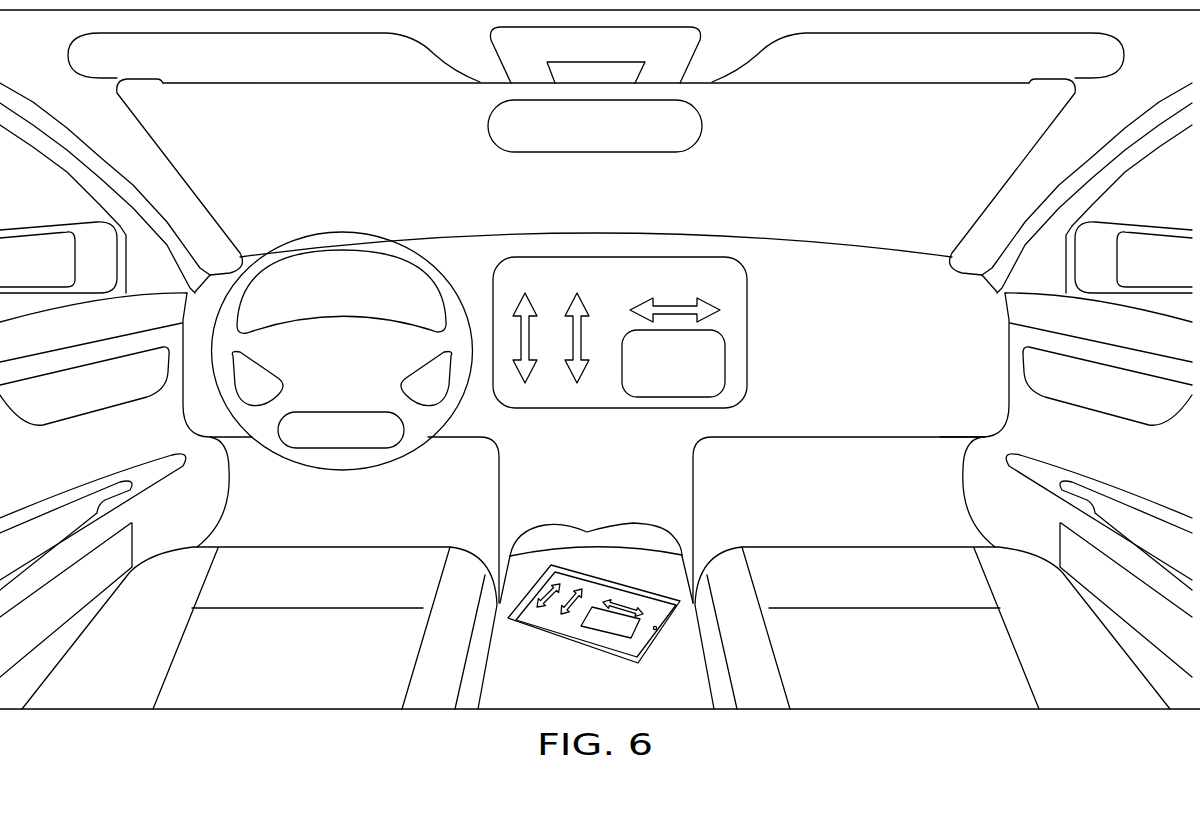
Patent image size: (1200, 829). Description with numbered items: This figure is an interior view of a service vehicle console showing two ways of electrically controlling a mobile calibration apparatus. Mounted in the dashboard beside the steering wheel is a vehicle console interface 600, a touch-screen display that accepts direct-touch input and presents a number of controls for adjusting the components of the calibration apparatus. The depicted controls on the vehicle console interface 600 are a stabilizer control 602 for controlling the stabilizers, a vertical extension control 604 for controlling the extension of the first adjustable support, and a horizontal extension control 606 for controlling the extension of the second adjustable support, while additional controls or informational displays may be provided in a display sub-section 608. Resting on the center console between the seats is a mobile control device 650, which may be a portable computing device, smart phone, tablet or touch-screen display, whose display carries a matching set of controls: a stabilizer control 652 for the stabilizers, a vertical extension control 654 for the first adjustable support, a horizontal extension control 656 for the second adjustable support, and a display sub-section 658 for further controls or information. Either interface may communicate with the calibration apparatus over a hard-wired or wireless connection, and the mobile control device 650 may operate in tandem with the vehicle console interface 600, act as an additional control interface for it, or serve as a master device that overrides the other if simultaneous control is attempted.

The vehicle console interface 600 is at (635, 291).
The stabilizer control 602 is at (536, 380).
The vertical extension control 604 is at (588, 380).
The horizontal extension control 606 is at (720, 310).
The display sub-section 608 is at (693, 376).
The mobile control device 650 is at (640, 658).
The stabilizer control 652 is at (541, 612).
The vertical extension control 654 is at (573, 585).
The horizontal extension control 656 is at (628, 600).
The display sub-section 658 is at (598, 626).